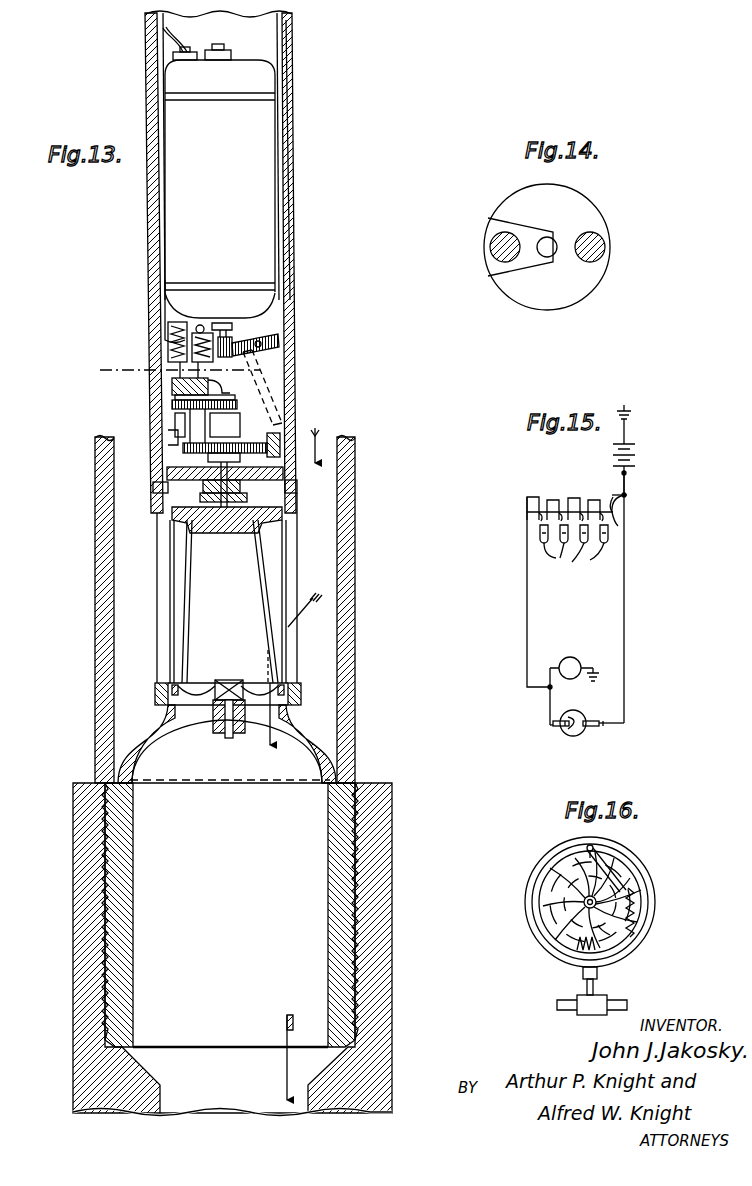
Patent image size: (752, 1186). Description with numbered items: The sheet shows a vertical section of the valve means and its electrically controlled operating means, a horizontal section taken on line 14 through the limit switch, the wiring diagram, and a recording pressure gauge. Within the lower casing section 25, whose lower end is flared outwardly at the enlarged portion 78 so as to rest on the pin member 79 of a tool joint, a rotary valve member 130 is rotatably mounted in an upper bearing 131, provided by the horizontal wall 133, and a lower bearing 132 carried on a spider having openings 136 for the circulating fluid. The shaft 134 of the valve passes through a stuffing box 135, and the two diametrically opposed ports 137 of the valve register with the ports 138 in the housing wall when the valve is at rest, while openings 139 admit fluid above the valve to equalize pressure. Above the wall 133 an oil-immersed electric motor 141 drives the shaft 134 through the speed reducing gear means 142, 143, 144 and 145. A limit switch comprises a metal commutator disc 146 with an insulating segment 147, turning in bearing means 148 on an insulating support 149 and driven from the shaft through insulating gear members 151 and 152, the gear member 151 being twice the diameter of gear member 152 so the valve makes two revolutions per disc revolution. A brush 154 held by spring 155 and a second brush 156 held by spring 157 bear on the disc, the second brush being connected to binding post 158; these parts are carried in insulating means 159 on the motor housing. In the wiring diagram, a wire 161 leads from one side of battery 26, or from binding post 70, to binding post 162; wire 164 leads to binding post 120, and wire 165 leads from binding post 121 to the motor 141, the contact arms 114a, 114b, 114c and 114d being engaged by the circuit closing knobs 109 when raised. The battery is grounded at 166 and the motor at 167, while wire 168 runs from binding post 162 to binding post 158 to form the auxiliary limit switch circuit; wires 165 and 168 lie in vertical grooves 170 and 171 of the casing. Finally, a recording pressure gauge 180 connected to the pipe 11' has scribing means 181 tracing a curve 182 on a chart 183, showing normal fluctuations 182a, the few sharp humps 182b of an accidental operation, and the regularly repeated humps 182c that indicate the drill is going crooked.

In FIG. 13, the ground connection 167 is at (163, 28).
In FIG. 15, the ground connection 167 is at (595, 667).
In FIG. 13, the vertical groove 171 is at (288, 108).
In FIG. 13, the electric motor 141 is at (262, 152).
In FIG. 15, the electric motor 141 is at (573, 657).
In FIG. 13, the wire 168 is at (285, 188).
In FIG. 15, the wire 168 is at (627, 588).
In FIG. 13, the vertical groove 170 is at (153, 182).
In FIG. 13, the wire 165 is at (152, 282).
In FIG. 15, the wire 165 is at (527, 582).
In FIG. 13, the binding post 158 is at (200, 325).
In FIG. 15, the binding post 158 is at (603, 726).
In FIG. 13, the spring 157 is at (224, 292).
In FIG. 13, the insulating means 159 is at (186, 322).
In FIG. 13, the spring 155 is at (162, 332).
In FIG. 13, the speed reducing gear 142 is at (234, 345).
In FIG. 13, the lower casing section 25 is at (258, 350).
In FIG. 13, the speed reducing gear 143 is at (275, 350).
In FIG. 13, the insulating gear member 152 is at (255, 403).
In FIG. 13, the speed reducing gear 145 is at (245, 437).
In FIG. 13, the speed reducing gear 144 is at (273, 443).
In FIG. 13, the section line 14 is at (108, 362).
In FIG. 13, the brush 154 is at (177, 368).
In FIG. 14, the brush 154 is at (495, 253).
In FIG. 15, the brush 154 is at (553, 718).
In FIG. 13, the second brush 156 is at (232, 387).
In FIG. 14, the second brush 156 is at (592, 242).
In FIG. 15, the second brush 156 is at (590, 731).
In FIG. 13, the insulating segment 147 is at (173, 383).
In FIG. 14, the insulating segment 147 is at (520, 263).
In FIG. 15, the insulating segment 147 is at (562, 732).
In FIG. 13, the commutator disc 146 is at (173, 403).
In FIG. 14, the commutator disc 146 is at (585, 213).
In FIG. 15, the commutator disc 146 is at (578, 713).
In FIG. 13, the insulating gear member 151 is at (172, 405).
In FIG. 13, the bearing means 148 is at (175, 424).
In FIG. 13, the insulating support 149 is at (178, 433).
In FIG. 13, the openings 139 is at (297, 487).
In FIG. 13, the upper bearing 131 is at (205, 481).
In FIG. 13, the rotary valve member 130 is at (195, 530).
In FIG. 13, the shaft 134 is at (225, 522).
In FIG. 13, the stuffing box 135 is at (253, 522).
In FIG. 13, the ports 137 is at (272, 596).
In FIG. 13, the ports 138 is at (167, 645).
In FIG. 13, the horizontal wall 133 is at (290, 482).
In FIG. 13, the spider openings 136 is at (192, 718).
In FIG. 13, the lower bearing 132 is at (214, 733).
In FIG. 13, the enlarged portion 78 is at (333, 857).
In FIG. 13, the pin member 79 is at (375, 963).
In FIG. 15, the ground connection 166 is at (628, 415).
In FIG. 15, the battery 26 is at (636, 452).
In FIG. 15, the binding post 70 is at (628, 473).
In FIG. 15, the wire 161 is at (629, 478).
In FIG. 15, the binding post 162 is at (630, 495).
In FIG. 15, the wire 164 is at (617, 512).
In FIG. 15, the resilient contact arm 114a is at (618, 525).
In FIG. 15, the resilient contact arm 114b is at (582, 505).
In FIG. 15, the resilient contact arm 114c is at (527, 512).
In FIG. 15, the resilient contact arm 114d is at (538, 520).
In FIG. 15, the binding post 121 is at (538, 497).
In FIG. 15, the binding post 120 is at (613, 497).
In FIG. 15, the circuit closing knobs 109 is at (574, 550).
In FIG. 16, the recording pressure gauge 180 is at (637, 855).
In FIG. 16, the scribing means 181 is at (625, 883).
In FIG. 16, the regularly repeated humps 182c is at (653, 890).
In FIG. 16, the pressure curve 182 is at (637, 943).
In FIG. 16, the sharp humps 182b is at (600, 940).
In FIG. 16, the normal fluctuations 182a is at (633, 875).
In FIG. 16, the chart 183 is at (563, 878).
In FIG. 16, the pipe 11' is at (606, 991).